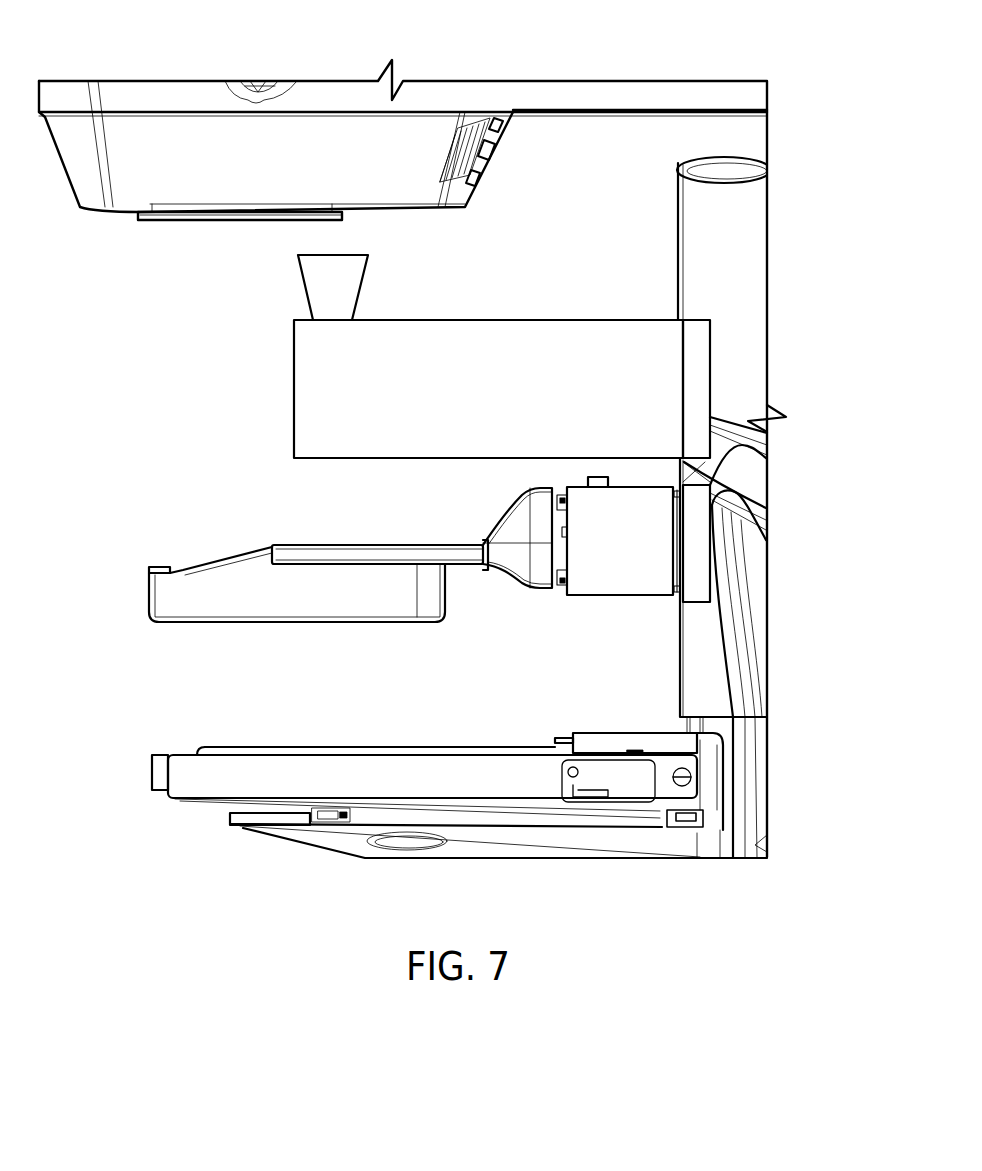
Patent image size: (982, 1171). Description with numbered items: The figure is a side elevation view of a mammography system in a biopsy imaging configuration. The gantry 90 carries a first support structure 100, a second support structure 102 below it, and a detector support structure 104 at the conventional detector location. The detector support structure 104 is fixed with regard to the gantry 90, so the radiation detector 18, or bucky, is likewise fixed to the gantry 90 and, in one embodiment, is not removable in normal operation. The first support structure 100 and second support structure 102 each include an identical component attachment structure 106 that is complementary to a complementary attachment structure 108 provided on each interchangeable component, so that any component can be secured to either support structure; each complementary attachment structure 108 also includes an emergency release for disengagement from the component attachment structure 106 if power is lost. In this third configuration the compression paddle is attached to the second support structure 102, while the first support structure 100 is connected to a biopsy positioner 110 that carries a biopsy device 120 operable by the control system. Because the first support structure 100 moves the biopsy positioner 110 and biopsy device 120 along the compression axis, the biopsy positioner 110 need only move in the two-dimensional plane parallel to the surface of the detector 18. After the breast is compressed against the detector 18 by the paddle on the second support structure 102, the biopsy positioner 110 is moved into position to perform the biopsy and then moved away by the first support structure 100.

The radiation detector 18 is at (303, 843).
The gantry 90 is at (722, 648).
The first support structure 100 is at (725, 348).
The second support structure 102 is at (724, 513).
The detector support structure 104 is at (710, 810).
The component attachment structure 106 is at (698, 388).
The complementary attachment structure 108 is at (677, 230).
The biopsy positioner 110 is at (587, 317).
The biopsy device 120 is at (298, 284).